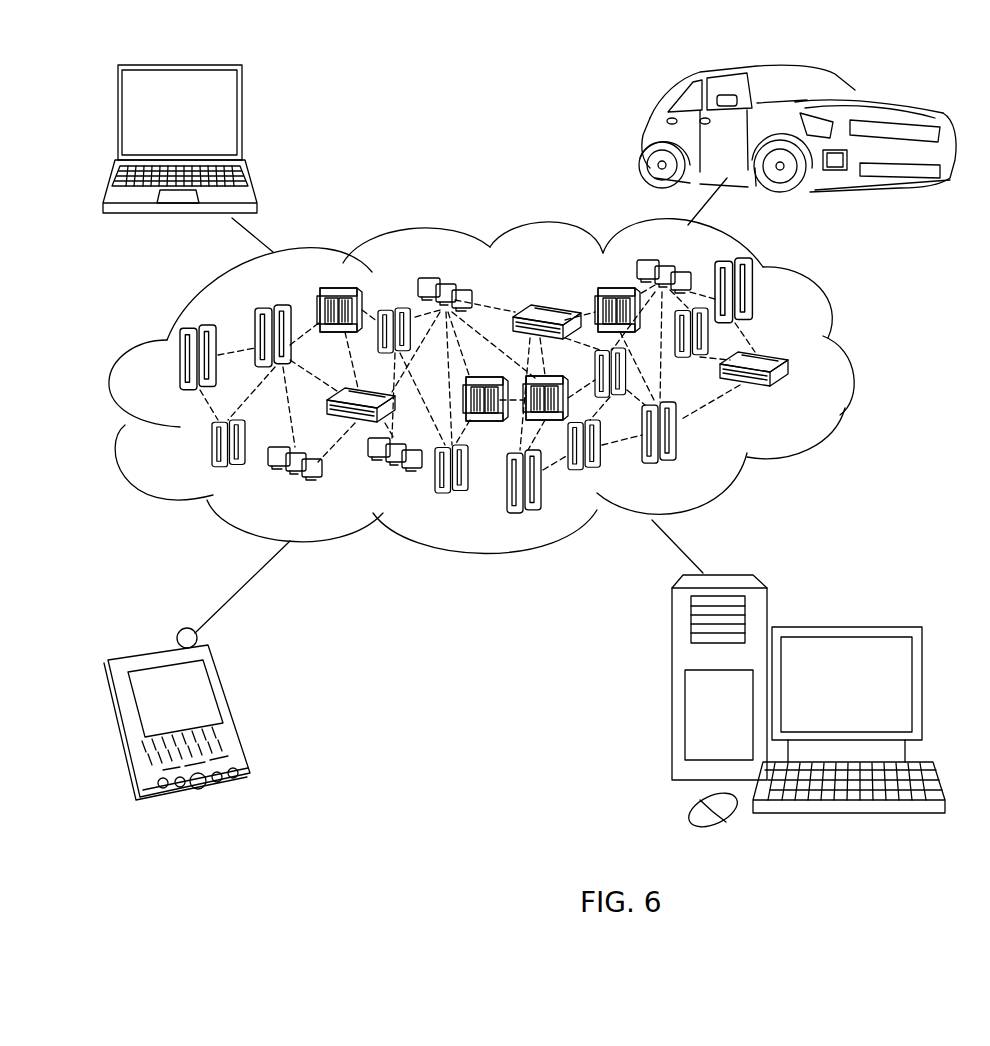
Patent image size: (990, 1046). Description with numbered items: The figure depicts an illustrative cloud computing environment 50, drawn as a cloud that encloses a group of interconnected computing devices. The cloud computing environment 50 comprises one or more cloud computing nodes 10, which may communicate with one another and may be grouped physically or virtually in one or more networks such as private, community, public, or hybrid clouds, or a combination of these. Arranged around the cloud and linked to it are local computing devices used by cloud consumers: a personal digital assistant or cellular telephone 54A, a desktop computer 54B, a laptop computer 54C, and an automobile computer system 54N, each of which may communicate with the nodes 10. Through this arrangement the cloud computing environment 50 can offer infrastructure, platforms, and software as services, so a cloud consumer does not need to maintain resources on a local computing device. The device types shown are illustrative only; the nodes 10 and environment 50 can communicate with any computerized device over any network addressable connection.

The cloud computing node 10 is at (804, 398).
The cloud computing environment 50 is at (847, 363).
The personal digital assistant or cellular telephone 54A is at (232, 710).
The desktop computer 54B is at (845, 626).
The laptop computer 54C is at (242, 120).
The automobile computer system 54N is at (645, 135).